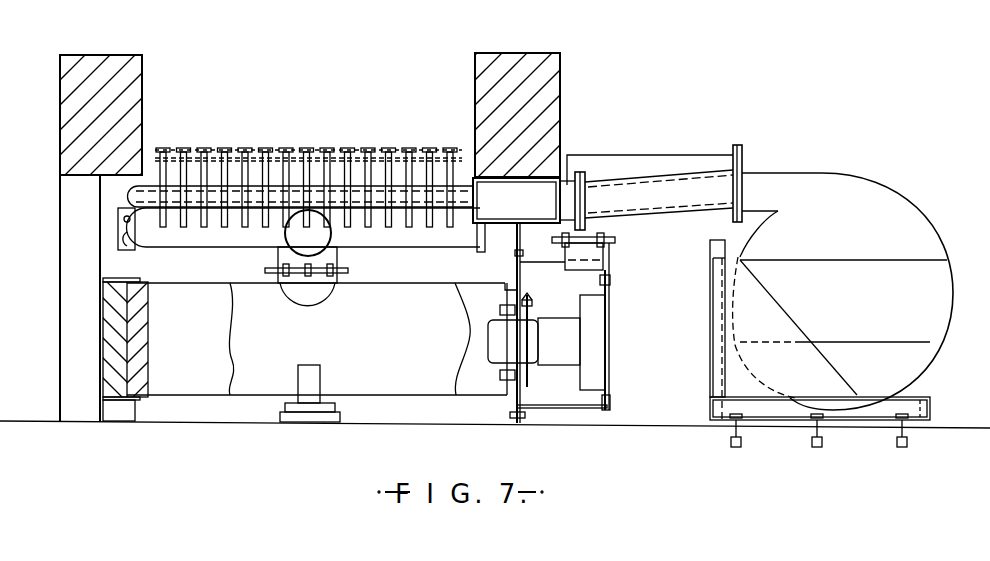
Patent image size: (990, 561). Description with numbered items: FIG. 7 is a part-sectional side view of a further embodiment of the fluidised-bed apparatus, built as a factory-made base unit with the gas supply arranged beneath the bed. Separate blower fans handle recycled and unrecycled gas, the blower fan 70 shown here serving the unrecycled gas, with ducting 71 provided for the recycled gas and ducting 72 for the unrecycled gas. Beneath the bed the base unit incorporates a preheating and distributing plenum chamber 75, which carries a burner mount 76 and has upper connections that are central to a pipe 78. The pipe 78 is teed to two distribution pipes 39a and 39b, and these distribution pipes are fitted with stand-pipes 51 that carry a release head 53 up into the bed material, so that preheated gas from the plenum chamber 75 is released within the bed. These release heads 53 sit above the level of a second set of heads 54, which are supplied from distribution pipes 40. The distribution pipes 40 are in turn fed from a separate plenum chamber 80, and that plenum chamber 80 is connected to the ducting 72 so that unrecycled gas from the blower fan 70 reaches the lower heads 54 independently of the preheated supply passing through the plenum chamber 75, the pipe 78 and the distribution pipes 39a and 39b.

The distribution pipe 39a is at (258, 238).
The distribution pipe 39b is at (425, 240).
The distribution pipes 40 is at (240, 192).
The stand-pipes 51 is at (185, 177).
The release head 53 is at (164, 133).
The heads 54 is at (323, 146).
The blower fan 70 is at (905, 238).
The ducting 71 is at (672, 163).
The ducting 72 is at (673, 200).
The preheating and distributing plenum chamber 75 is at (419, 298).
The burner mount 76 is at (551, 330).
The pipe 78 is at (298, 243).
The plenum chamber 80 is at (506, 210).